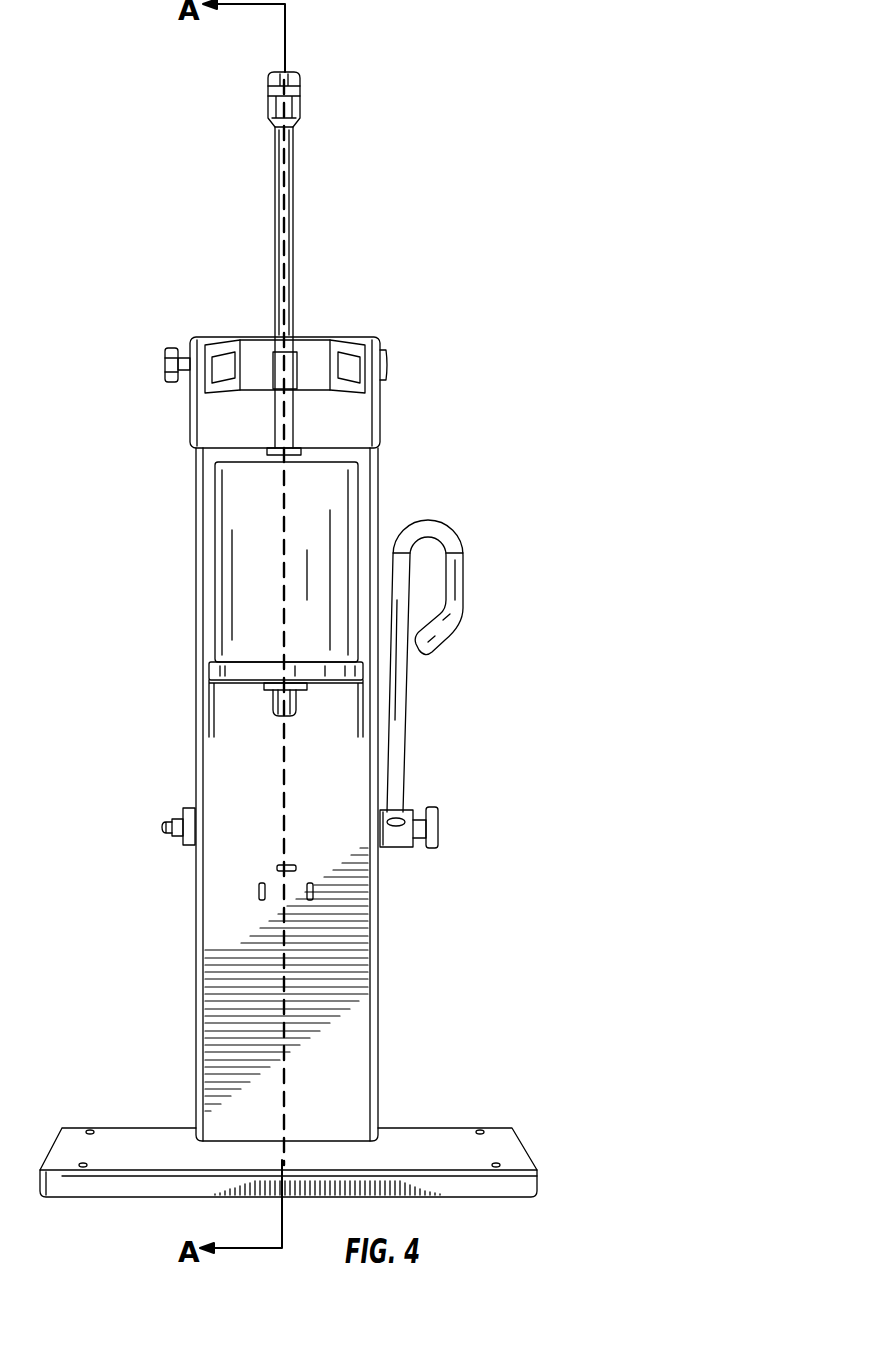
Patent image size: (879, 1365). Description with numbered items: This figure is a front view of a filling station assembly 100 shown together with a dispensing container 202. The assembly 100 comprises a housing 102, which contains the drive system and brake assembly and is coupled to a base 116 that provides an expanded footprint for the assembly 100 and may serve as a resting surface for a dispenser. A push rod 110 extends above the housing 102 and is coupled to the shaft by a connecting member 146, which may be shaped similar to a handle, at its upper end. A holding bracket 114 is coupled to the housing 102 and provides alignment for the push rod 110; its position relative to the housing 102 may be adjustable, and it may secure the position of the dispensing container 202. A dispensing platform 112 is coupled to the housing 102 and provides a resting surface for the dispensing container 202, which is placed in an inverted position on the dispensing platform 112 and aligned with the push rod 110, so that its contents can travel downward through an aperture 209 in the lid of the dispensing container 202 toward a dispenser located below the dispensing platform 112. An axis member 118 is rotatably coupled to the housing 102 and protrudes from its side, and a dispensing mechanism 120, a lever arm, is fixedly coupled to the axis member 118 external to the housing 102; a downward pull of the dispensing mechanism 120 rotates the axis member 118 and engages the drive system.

The filling station assembly 100 is at (112, 207).
The housing 102 is at (377, 970).
The push rod 110 is at (300, 213).
The dispensing platform 112 is at (207, 697).
The holding bracket 114 is at (190, 420).
The base 116 is at (527, 1153).
The axis member 118 is at (165, 827).
The dispensing mechanism 120 is at (463, 568).
The connecting member 146 is at (300, 92).
The dispensing container 202 is at (220, 528).
The aperture 209 is at (275, 708).